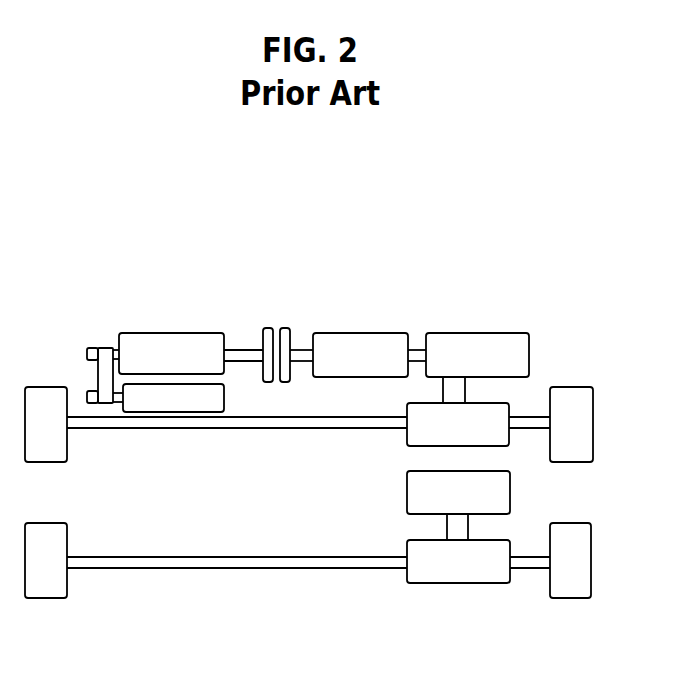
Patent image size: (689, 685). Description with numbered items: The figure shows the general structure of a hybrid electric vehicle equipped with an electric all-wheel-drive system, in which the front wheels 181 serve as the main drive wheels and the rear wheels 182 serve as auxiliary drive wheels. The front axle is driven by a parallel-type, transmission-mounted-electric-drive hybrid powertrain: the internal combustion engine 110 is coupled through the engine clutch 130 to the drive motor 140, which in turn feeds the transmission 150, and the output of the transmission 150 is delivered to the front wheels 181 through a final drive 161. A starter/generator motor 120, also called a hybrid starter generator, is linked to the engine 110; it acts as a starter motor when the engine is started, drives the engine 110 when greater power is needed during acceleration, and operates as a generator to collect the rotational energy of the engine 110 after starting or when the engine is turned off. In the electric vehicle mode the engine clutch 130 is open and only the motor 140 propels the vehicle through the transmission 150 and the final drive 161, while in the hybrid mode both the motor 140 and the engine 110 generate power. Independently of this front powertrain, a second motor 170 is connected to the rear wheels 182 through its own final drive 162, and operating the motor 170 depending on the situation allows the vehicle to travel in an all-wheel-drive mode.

The internal combustion engine 110 is at (172, 333).
The starter/generator motor 120 is at (225, 397).
The engine clutch 130 is at (270, 328).
The motor 140 is at (366, 333).
The transmission 150 is at (483, 333).
The final drive 161 is at (412, 447).
The final drive 162 is at (412, 585).
The motor 170 is at (407, 493).
The front wheels 181 is at (45, 387).
The rear wheels 182 is at (45, 523).